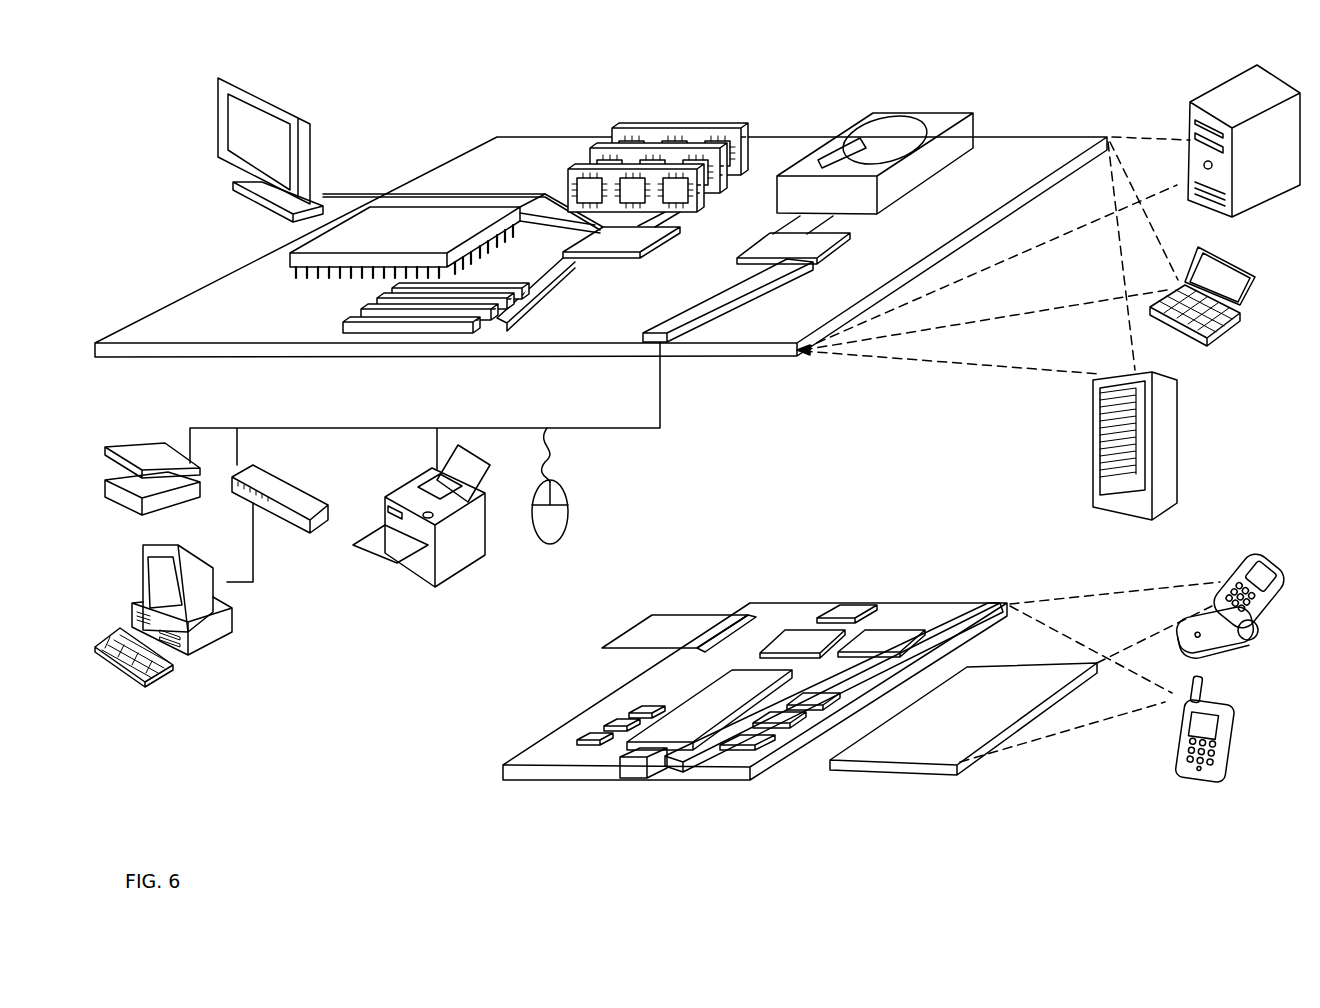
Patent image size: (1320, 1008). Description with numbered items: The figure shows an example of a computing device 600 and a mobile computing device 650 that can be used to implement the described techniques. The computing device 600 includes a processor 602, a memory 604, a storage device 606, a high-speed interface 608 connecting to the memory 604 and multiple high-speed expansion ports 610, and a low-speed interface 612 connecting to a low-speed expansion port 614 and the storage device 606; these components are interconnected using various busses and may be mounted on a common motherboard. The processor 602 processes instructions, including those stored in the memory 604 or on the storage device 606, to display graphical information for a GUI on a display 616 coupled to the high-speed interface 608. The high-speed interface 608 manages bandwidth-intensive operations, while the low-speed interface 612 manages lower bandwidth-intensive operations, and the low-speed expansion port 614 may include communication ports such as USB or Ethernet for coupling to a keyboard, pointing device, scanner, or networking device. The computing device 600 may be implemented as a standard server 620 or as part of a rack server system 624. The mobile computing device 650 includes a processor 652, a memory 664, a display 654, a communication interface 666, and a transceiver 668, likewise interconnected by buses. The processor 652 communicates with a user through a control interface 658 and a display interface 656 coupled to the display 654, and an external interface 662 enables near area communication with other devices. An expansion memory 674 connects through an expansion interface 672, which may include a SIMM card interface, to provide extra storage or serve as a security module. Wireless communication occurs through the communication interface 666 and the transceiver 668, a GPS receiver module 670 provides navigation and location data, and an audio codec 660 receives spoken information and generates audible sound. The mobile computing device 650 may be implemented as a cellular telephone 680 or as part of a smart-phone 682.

The computing device 600 is at (420, 105).
The processor 602 is at (296, 256).
The memory 604 is at (620, 128).
The storage device 606 is at (848, 85).
The high-speed interface 608 is at (588, 248).
The high-speed expansion ports 610 is at (366, 316).
The low-speed interface 612 is at (776, 246).
The low-speed expansion port 614 is at (665, 343).
The display 616 is at (232, 82).
The standard server 620 is at (1188, 115).
The rack server system 624 is at (1093, 468).
The mobile computing device 650 is at (481, 774).
The processor 652 is at (680, 732).
The display 654 is at (925, 750).
The display interface 656 is at (752, 748).
The control interface 658 is at (784, 727).
The audio codec 660 is at (814, 698).
The external interface 662 is at (650, 770).
The memory 664 is at (597, 723).
The communication interface 666 is at (802, 640).
The transceiver 668 is at (883, 640).
The GPS receiver module 670 is at (857, 603).
The expansion interface 672 is at (733, 613).
The expansion memory 674 is at (652, 617).
The cellular telephone 680 is at (1237, 557).
The smart-phone 682 is at (1180, 738).